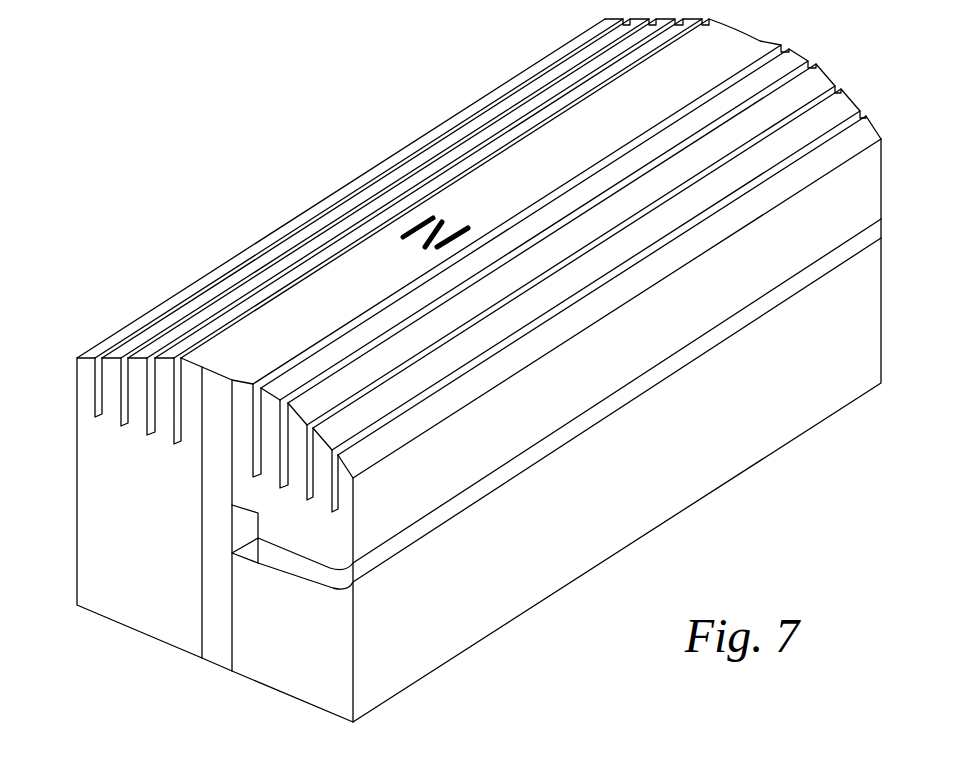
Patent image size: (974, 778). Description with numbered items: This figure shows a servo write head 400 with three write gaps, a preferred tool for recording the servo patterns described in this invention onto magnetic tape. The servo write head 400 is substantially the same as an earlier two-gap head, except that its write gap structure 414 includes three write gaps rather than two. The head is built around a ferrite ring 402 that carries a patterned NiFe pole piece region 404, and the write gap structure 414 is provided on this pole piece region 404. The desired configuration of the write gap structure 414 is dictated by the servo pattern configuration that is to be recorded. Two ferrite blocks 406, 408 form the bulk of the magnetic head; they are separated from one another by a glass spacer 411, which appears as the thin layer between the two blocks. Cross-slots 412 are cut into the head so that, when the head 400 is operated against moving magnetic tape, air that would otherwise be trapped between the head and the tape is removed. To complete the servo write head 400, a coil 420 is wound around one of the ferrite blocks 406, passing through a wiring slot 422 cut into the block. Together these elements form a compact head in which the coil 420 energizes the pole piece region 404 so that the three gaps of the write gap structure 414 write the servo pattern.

The servo write head 400 is at (203, 180).
The ferrite ring 402 is at (505, 638).
The pole piece region 404 is at (360, 267).
The ferrite block 406 is at (288, 682).
The ferrite block 408 is at (100, 595).
The glass spacer 411 is at (213, 657).
The cross-slots 412 is at (123, 398).
The write gap structure 414 is at (420, 218).
The coil 420 is at (882, 238).
The wiring slot 422 is at (238, 523).